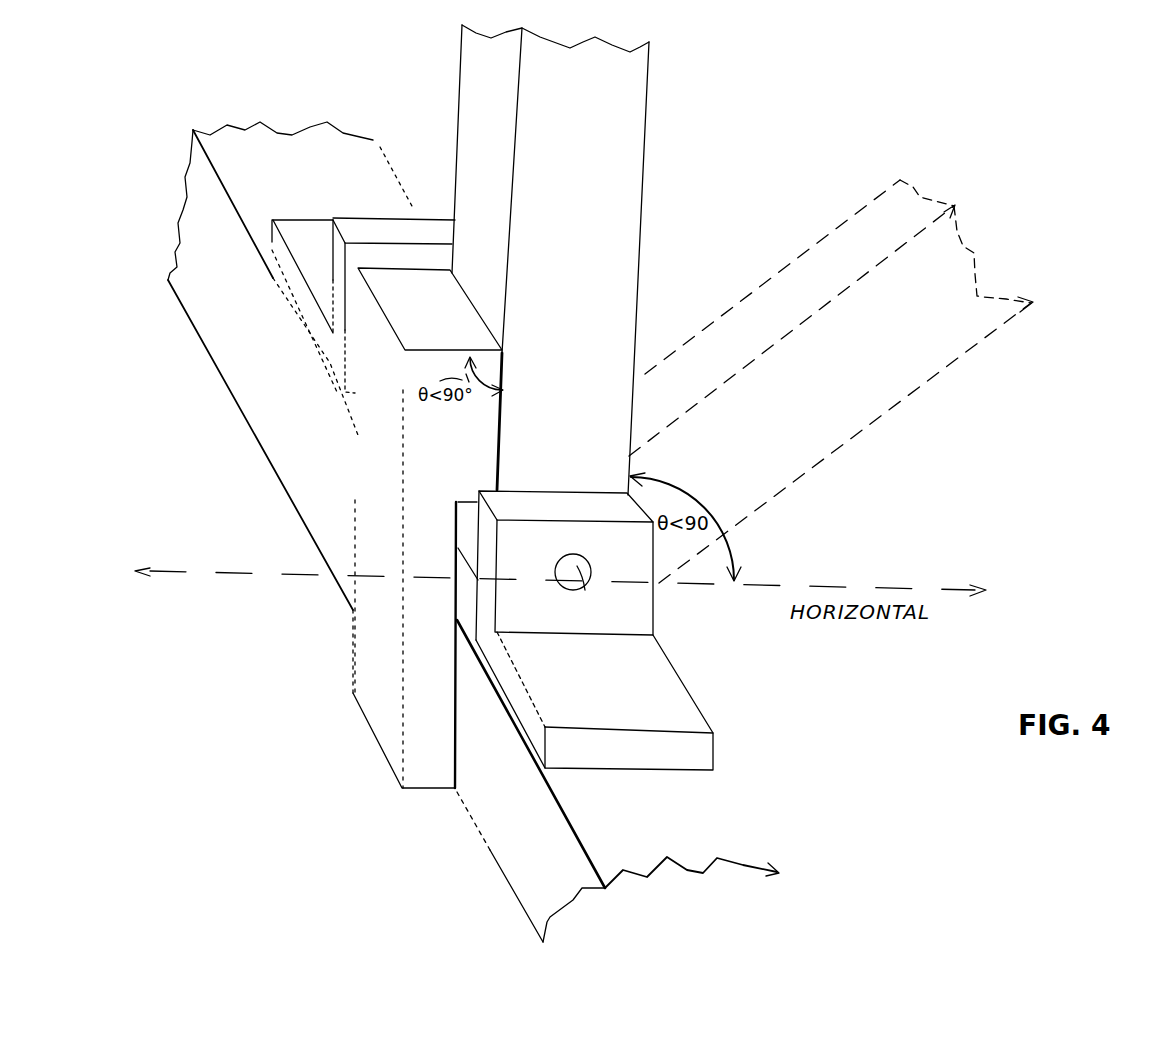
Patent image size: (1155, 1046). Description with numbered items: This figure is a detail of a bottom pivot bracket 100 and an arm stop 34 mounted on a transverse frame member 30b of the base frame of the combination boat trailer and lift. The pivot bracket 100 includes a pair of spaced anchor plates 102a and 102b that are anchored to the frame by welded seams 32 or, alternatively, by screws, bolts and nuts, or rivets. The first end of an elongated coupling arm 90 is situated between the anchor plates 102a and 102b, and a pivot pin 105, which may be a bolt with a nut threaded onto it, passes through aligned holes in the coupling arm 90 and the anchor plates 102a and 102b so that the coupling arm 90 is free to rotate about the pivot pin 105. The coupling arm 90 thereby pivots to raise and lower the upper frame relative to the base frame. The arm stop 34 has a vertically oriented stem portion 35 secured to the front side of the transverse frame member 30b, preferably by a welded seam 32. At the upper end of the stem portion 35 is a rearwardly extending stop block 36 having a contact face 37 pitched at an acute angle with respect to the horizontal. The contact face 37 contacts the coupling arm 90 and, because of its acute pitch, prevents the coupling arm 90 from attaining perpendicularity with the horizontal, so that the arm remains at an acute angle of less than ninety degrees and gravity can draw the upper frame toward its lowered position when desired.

The coupling arm 90 is at (617, 97).
The arm stop 34 is at (380, 477).
The stem portion 35 is at (377, 622).
The welded seam 32 is at (453, 737).
The stop block 36 is at (473, 423).
The contact face 37 is at (500, 444).
The anchor plate 102a is at (632, 615).
The anchor plate 102b is at (432, 237).
The pivot bracket 100 is at (635, 678).
The pivot pin 105 is at (607, 553).
The transverse frame member 30b is at (718, 833).